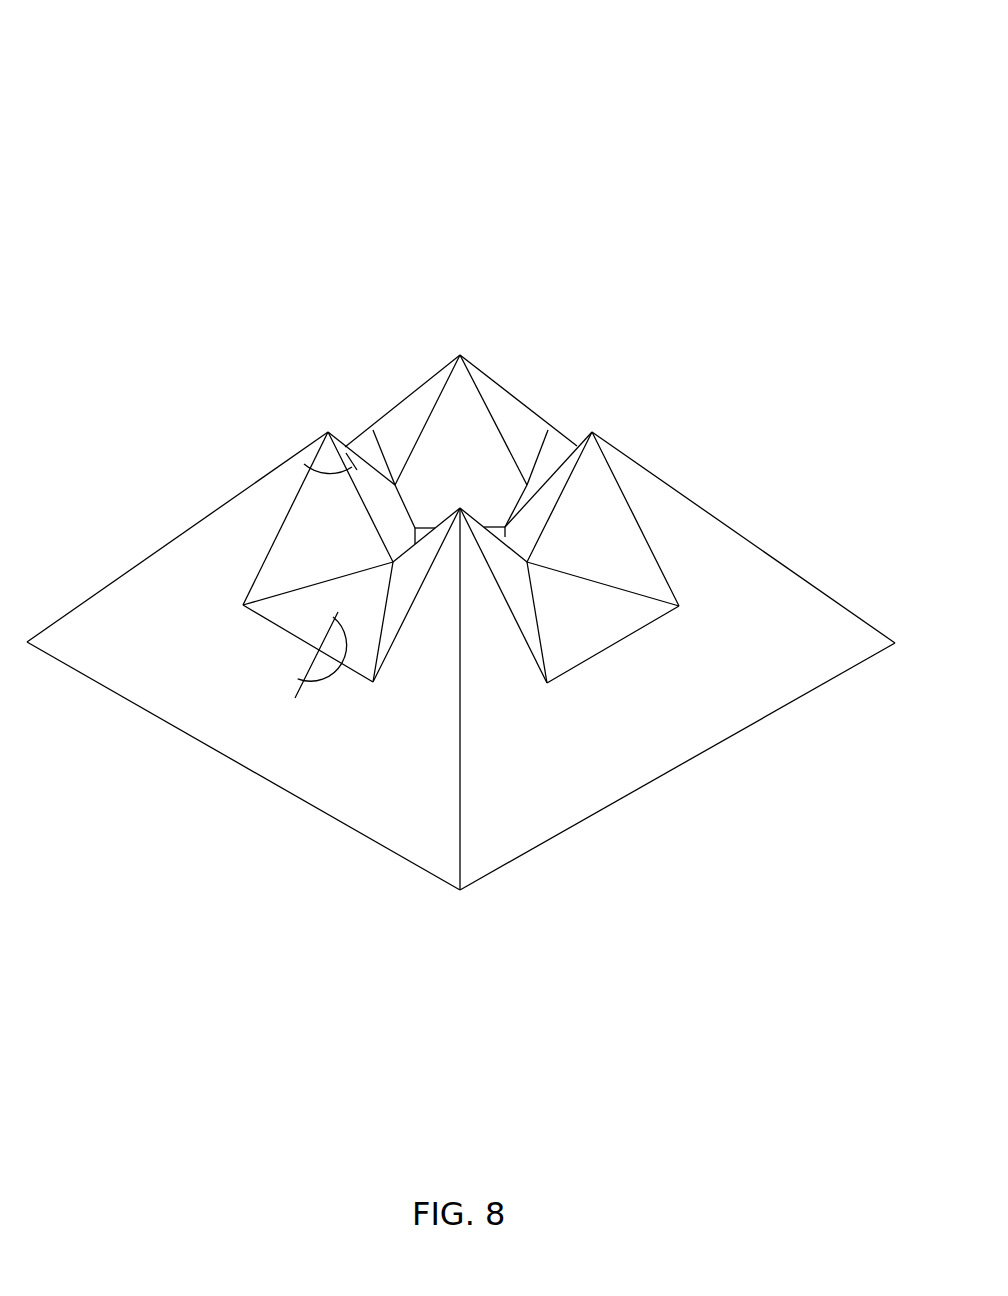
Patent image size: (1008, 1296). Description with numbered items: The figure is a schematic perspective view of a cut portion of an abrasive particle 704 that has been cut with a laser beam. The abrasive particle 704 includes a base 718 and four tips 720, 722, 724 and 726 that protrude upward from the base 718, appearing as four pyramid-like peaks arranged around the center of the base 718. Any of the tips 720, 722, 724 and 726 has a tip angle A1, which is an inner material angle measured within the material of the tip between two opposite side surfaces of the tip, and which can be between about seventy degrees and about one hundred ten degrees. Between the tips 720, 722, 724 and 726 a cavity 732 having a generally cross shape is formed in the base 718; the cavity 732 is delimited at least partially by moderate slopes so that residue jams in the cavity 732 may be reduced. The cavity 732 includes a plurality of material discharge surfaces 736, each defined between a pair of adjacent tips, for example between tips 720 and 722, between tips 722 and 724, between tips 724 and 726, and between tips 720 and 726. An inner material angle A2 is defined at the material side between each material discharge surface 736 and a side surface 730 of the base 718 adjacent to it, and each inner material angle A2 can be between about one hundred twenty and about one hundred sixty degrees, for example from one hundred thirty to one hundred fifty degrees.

The abrasive particle 704 is at (814, 58).
The base 718 is at (785, 608).
The tip 720 is at (438, 354).
The tip 722 is at (612, 430).
The tip 724 is at (488, 650).
The tip 726 is at (294, 438).
The side surface 730 is at (347, 798).
The cavity 732 is at (507, 535).
The material discharge surface 736 is at (302, 611).
The tip angle A1 is at (330, 470).
The inner material angle A2 is at (321, 656).